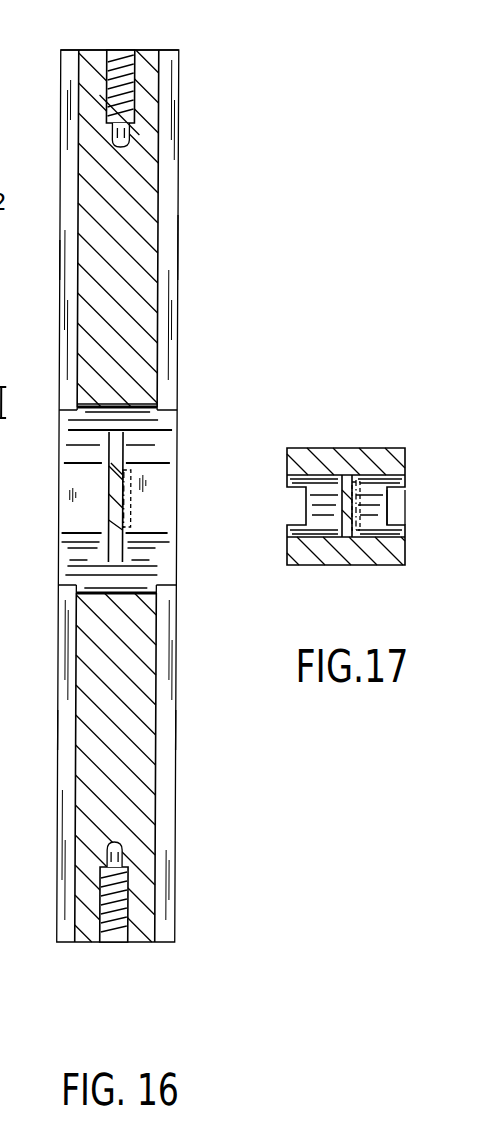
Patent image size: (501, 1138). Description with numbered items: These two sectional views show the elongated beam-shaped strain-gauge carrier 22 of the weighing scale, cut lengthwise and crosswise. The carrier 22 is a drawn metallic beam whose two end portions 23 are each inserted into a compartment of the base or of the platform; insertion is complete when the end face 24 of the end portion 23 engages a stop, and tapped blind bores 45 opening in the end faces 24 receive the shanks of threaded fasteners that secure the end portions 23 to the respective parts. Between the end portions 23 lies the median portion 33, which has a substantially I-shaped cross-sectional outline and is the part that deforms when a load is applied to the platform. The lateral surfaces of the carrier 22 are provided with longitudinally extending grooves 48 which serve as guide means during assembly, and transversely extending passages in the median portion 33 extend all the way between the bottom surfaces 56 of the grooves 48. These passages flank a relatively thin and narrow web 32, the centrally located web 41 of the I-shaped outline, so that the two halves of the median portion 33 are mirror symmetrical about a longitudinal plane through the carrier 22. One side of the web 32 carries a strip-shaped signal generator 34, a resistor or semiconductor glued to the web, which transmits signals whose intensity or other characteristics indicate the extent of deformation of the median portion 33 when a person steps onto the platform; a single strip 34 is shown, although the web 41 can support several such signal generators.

In FIG. 16, the carrier 22 is at (189, 228).
In FIG. 17, the carrier 22 is at (341, 438).
In FIG. 16, the end portion 23 is at (149, 107).
In FIG. 16, the end face 24 is at (148, 48).
In FIG. 17, the web 32 is at (340, 512).
In FIG. 16, the median portion 33 is at (123, 401).
In FIG. 16, the signal generator 34 is at (127, 497).
In FIG. 17, the signal generator 34 is at (353, 518).
In FIG. 16, the web 41 is at (116, 505).
In FIG. 16, the tapped blind bore 45 is at (120, 58).
In FIG. 16, the groove 48 is at (73, 262).
In FIG. 17, the groove 48 is at (395, 512).
In FIG. 16, the bottom surface 56 is at (163, 792).